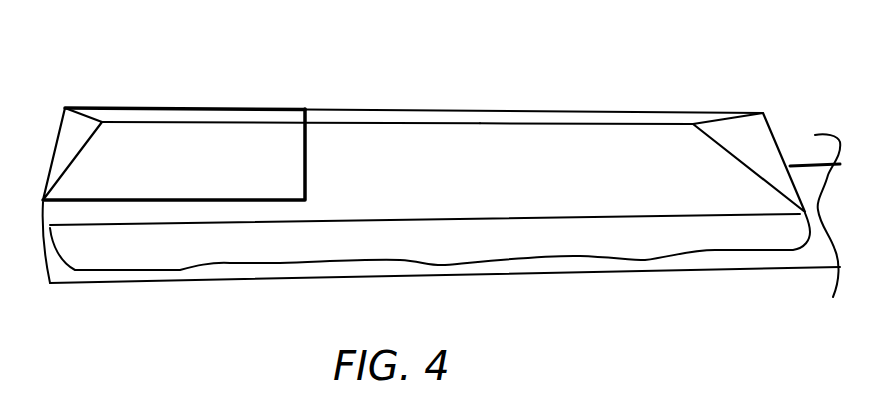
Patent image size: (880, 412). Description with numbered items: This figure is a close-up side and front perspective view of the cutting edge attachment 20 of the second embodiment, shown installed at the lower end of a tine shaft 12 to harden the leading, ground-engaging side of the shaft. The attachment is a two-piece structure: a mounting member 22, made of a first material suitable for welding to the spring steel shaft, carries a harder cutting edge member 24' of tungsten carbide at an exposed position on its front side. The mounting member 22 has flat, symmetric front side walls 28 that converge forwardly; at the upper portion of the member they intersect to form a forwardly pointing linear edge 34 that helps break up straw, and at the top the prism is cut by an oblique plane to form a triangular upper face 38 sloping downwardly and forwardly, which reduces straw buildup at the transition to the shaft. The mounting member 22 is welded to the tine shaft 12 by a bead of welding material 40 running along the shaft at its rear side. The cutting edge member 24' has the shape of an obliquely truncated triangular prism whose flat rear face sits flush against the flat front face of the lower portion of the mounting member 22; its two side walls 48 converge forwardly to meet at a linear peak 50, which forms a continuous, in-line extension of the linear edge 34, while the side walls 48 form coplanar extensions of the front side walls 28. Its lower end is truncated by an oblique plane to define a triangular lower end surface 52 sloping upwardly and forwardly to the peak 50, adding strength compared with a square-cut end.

The tine shaft 12 is at (783, 262).
The cutting edge attachment 20 is at (533, 92).
The mounting member 22 is at (607, 110).
The cutting edge member 24' is at (200, 72).
The front side walls 28 is at (408, 118).
The linear edge 34 is at (483, 123).
The triangular upper face 38 is at (767, 147).
The bead of welding material 40 is at (575, 238).
The side walls 48 is at (263, 121).
The linear peak 50 is at (152, 122).
The triangular lower end surface 52 is at (72, 148).